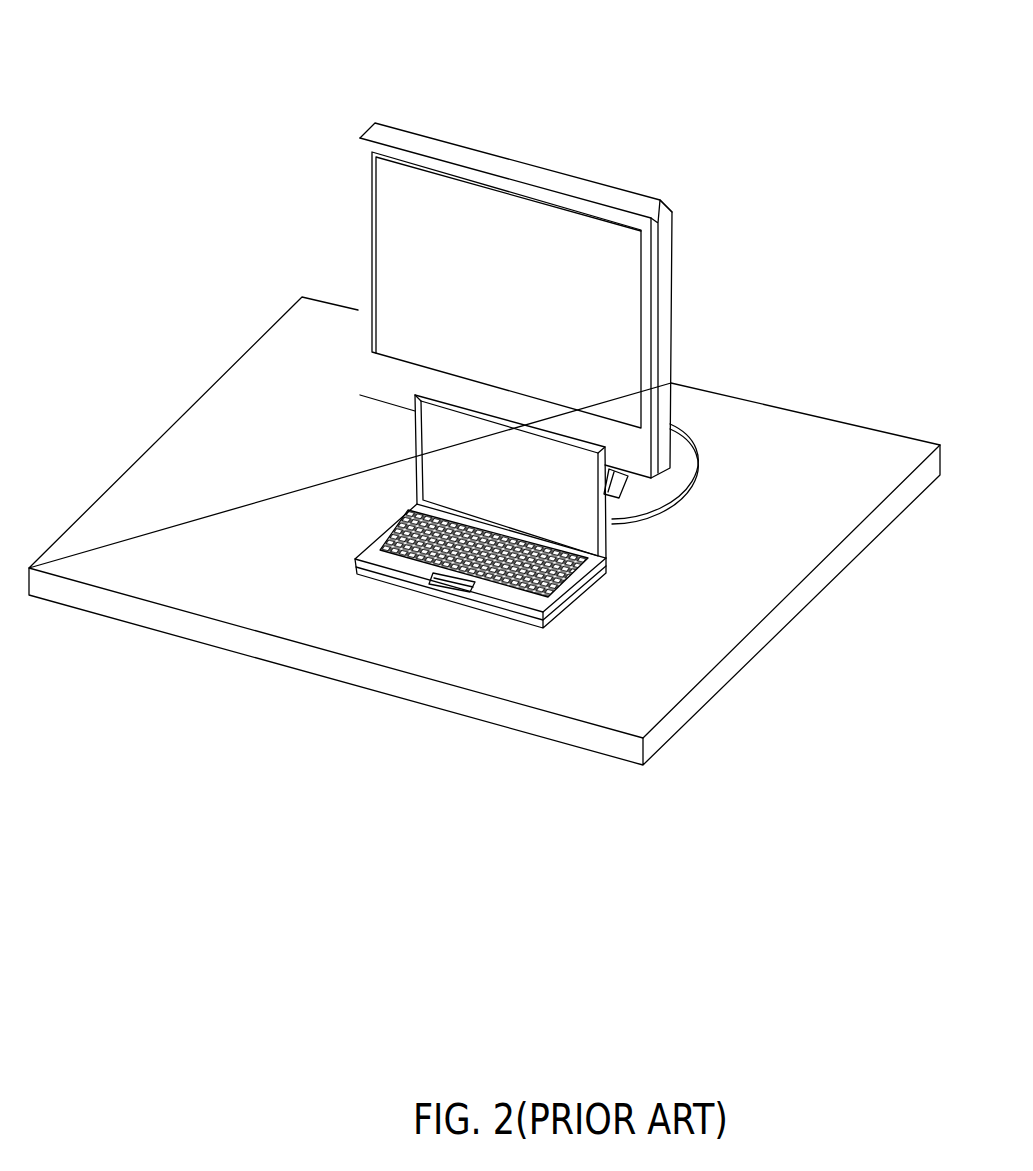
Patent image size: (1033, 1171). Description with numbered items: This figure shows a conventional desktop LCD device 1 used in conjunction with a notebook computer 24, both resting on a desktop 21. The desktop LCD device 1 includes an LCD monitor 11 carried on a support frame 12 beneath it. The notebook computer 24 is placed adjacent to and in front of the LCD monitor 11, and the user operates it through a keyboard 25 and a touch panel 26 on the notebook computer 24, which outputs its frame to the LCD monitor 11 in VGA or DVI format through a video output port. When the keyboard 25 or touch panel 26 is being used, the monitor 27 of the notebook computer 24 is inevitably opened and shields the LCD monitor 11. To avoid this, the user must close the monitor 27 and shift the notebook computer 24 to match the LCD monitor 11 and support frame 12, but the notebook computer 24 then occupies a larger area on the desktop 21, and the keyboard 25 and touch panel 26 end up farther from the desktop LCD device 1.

The desktop LCD device 1 is at (574, 309).
The LCD monitor 11 is at (623, 268).
The support frame 12 is at (613, 488).
The desktop 21 is at (241, 387).
The notebook computer 24 is at (468, 576).
The keyboard 25 is at (391, 538).
The touch panel 26 is at (461, 581).
The monitor 27 is at (441, 446).